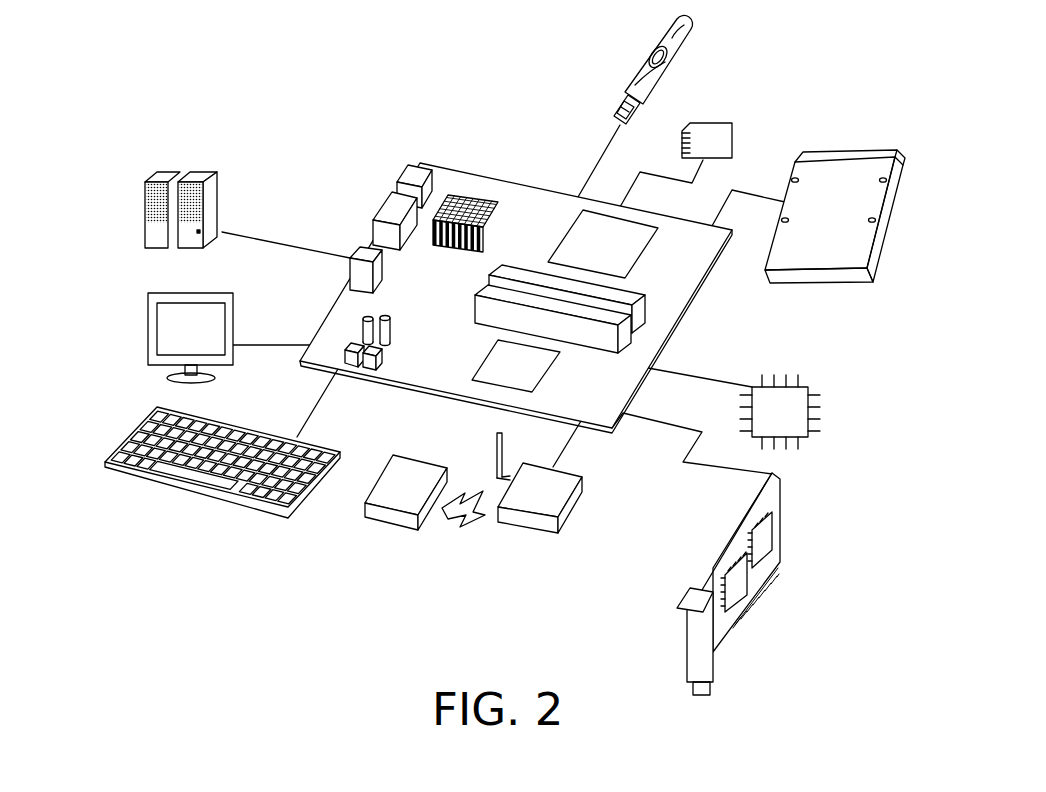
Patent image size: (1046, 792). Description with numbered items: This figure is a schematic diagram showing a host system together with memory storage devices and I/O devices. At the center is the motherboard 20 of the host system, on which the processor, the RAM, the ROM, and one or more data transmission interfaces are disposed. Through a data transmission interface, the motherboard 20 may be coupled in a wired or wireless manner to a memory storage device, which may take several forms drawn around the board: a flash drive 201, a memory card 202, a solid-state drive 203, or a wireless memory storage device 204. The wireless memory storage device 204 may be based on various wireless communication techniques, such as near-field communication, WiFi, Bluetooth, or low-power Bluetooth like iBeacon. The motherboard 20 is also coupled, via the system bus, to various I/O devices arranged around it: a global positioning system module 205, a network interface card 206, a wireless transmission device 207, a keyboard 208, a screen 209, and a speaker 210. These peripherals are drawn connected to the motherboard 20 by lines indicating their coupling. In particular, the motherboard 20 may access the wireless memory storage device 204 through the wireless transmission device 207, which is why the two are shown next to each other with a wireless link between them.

The motherboard 20 is at (517, 207).
The flash drive 201 is at (640, 60).
The memory card 202 is at (733, 133).
The solid-state drive 203 is at (852, 150).
The wireless memory storage device 204 is at (377, 472).
The global positioning system module 205 is at (822, 410).
The network interface card 206 is at (780, 530).
The wireless transmission device 207 is at (573, 515).
The keyboard 208 is at (225, 500).
The screen 209 is at (148, 346).
The speaker 210 is at (145, 233).